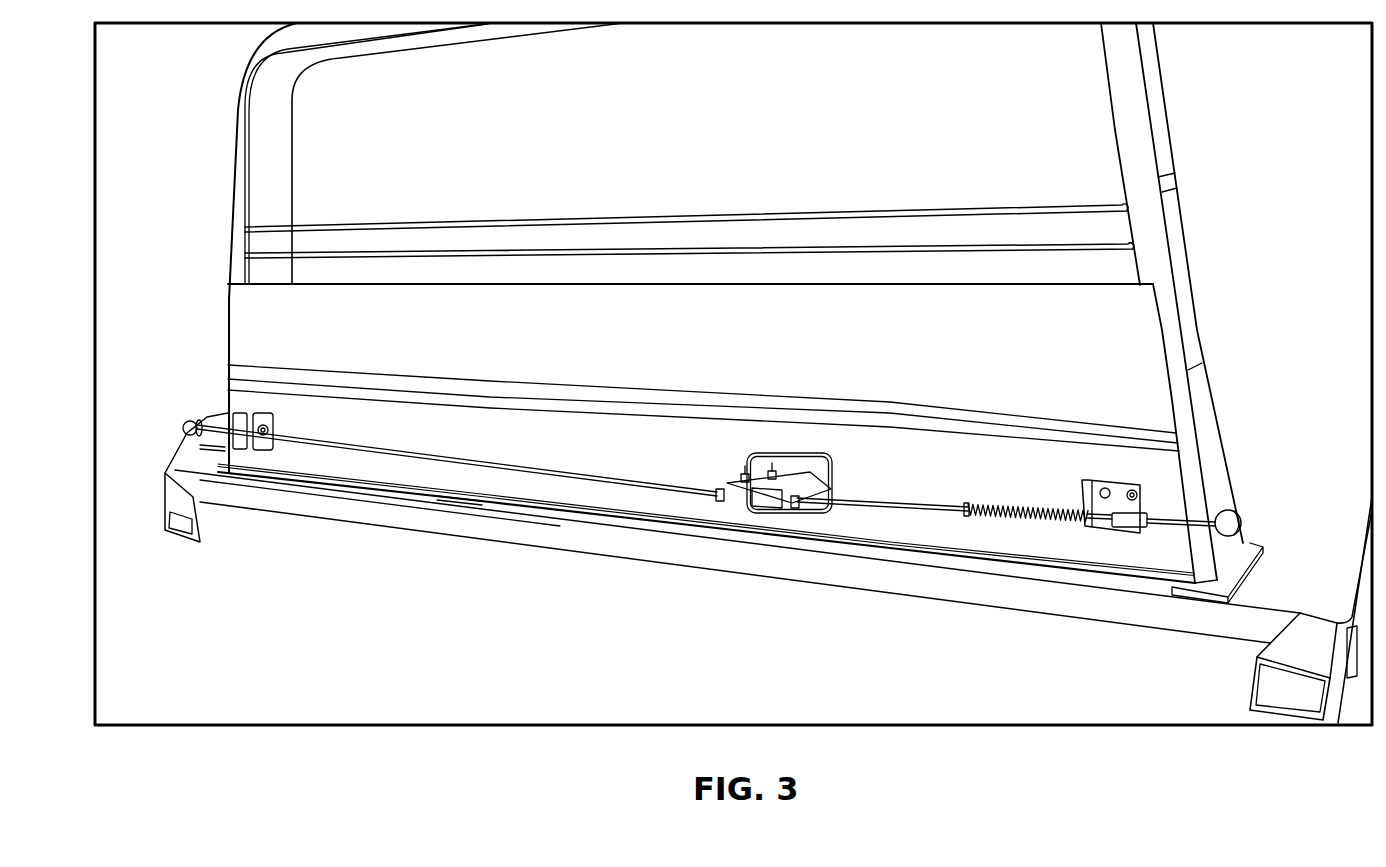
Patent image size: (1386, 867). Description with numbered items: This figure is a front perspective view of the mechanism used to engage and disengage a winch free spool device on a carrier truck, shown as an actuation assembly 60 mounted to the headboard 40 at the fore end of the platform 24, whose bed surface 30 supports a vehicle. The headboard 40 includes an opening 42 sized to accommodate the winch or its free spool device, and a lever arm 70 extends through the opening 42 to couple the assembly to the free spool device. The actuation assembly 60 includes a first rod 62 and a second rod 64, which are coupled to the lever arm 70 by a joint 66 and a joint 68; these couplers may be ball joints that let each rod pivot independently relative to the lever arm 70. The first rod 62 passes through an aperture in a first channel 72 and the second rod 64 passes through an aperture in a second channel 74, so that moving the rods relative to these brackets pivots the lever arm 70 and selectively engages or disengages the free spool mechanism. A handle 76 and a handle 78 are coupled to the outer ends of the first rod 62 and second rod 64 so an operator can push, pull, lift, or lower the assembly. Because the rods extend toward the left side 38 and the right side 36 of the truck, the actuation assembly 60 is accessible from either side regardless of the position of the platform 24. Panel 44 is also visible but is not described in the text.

The platform 24 is at (320, 510).
The bed surface 30 is at (1311, 404).
The right side 36 is at (232, 515).
The left side 38 is at (1318, 527).
The headboard 40 is at (1173, 217).
The opening 42 is at (832, 480).
The panel 44 is at (690, 318).
The actuation assembly 60 is at (513, 440).
The first rod 62 is at (925, 510).
The second rod 64 is at (588, 470).
The joint 66 is at (770, 492).
The joint 68 is at (722, 483).
The lever arm 70 is at (788, 470).
The first channel 72 is at (1082, 493).
The second channel 74 is at (273, 430).
The handle 76 is at (1245, 520).
The handle 78 is at (190, 420).